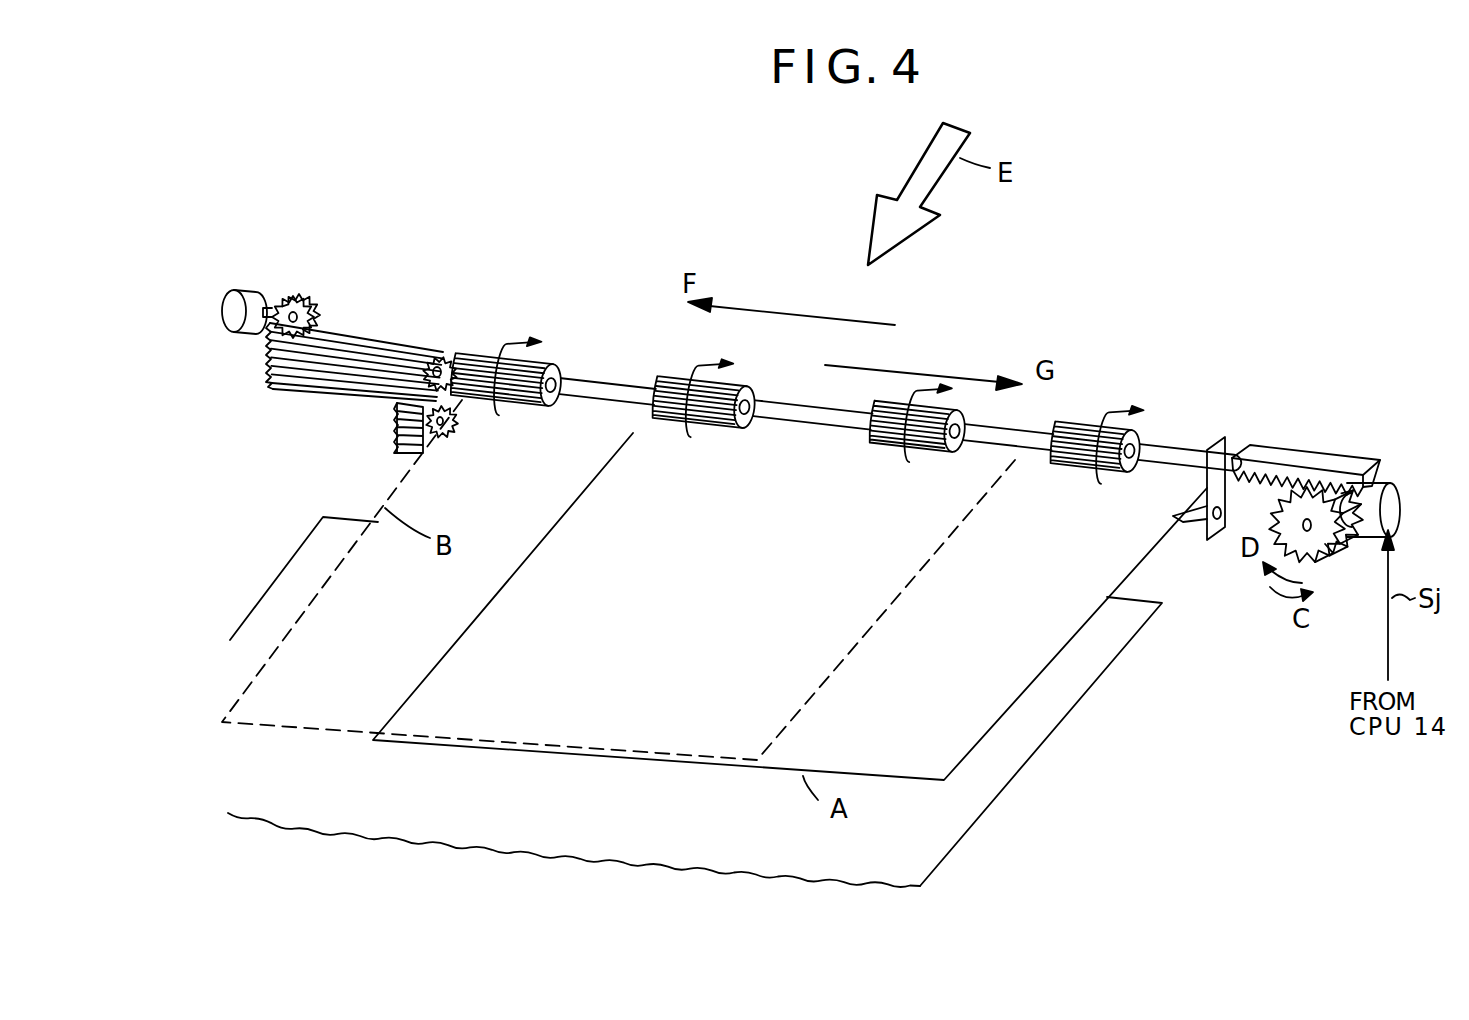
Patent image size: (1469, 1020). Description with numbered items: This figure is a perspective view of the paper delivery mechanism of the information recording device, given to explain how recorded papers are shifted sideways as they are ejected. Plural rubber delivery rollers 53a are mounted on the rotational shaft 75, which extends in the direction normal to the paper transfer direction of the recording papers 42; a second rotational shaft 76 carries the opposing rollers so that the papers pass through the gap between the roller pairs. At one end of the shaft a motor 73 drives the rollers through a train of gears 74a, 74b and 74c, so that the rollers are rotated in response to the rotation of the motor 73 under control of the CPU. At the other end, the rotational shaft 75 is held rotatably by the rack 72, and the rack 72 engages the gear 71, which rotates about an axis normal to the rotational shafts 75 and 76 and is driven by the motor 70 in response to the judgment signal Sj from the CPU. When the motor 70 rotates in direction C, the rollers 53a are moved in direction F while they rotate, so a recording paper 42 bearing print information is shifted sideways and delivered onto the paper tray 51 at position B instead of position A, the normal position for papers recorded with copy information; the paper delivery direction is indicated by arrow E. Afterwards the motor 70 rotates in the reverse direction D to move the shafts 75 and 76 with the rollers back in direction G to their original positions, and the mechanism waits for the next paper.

The recording papers 42 is at (470, 745).
The paper tray 51 is at (955, 852).
The delivery rollers 53a is at (1082, 418).
The motor 70 is at (1372, 490).
The gear 71 is at (1330, 553).
The rack 72 is at (1262, 442).
The motor 73 is at (240, 290).
The gear 74a is at (297, 395).
The gear 74b is at (405, 455).
The gear 74c is at (310, 300).
The rotational shaft 75 is at (1190, 444).
The rotational shaft 76 is at (1190, 524).